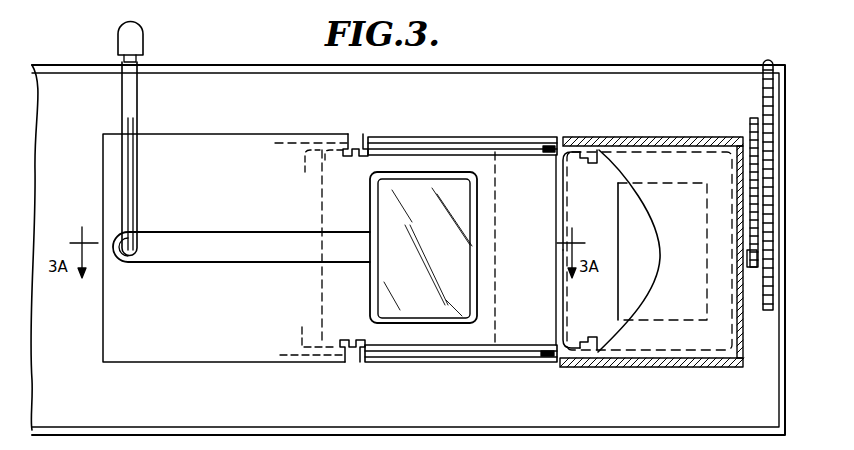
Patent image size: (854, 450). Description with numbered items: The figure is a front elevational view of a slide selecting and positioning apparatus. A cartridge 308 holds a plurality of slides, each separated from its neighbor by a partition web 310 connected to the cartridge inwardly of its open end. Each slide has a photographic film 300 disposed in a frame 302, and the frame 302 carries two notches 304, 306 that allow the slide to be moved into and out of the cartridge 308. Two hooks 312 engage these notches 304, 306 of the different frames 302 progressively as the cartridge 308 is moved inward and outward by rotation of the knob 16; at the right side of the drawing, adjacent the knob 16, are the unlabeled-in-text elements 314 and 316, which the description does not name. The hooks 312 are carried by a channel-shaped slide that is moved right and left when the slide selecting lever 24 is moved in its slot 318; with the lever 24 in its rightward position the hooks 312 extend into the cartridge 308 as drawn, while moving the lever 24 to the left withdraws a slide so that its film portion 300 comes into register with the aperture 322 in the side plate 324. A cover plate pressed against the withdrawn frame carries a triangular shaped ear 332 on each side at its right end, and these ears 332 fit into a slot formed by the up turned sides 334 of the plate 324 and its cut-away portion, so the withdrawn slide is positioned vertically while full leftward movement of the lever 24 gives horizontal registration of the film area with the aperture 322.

The knob 16 is at (765, 65).
The slide selecting lever 24 is at (140, 47).
The film 300 is at (456, 289).
The frame 302 is at (672, 358).
The notch 304 is at (569, 338).
The notch 306 is at (596, 173).
The cartridge 308 is at (688, 137).
The web 310 is at (625, 148).
The hook 312 is at (356, 140).
The pivot strip 314 is at (752, 118).
The retainer block 316 is at (750, 270).
The slot 318 is at (190, 240).
The aperture 322 is at (478, 248).
The side plate 324 is at (257, 134).
The triangular shaped ear 332 is at (505, 143).
The up turned sides 334 is at (448, 128).